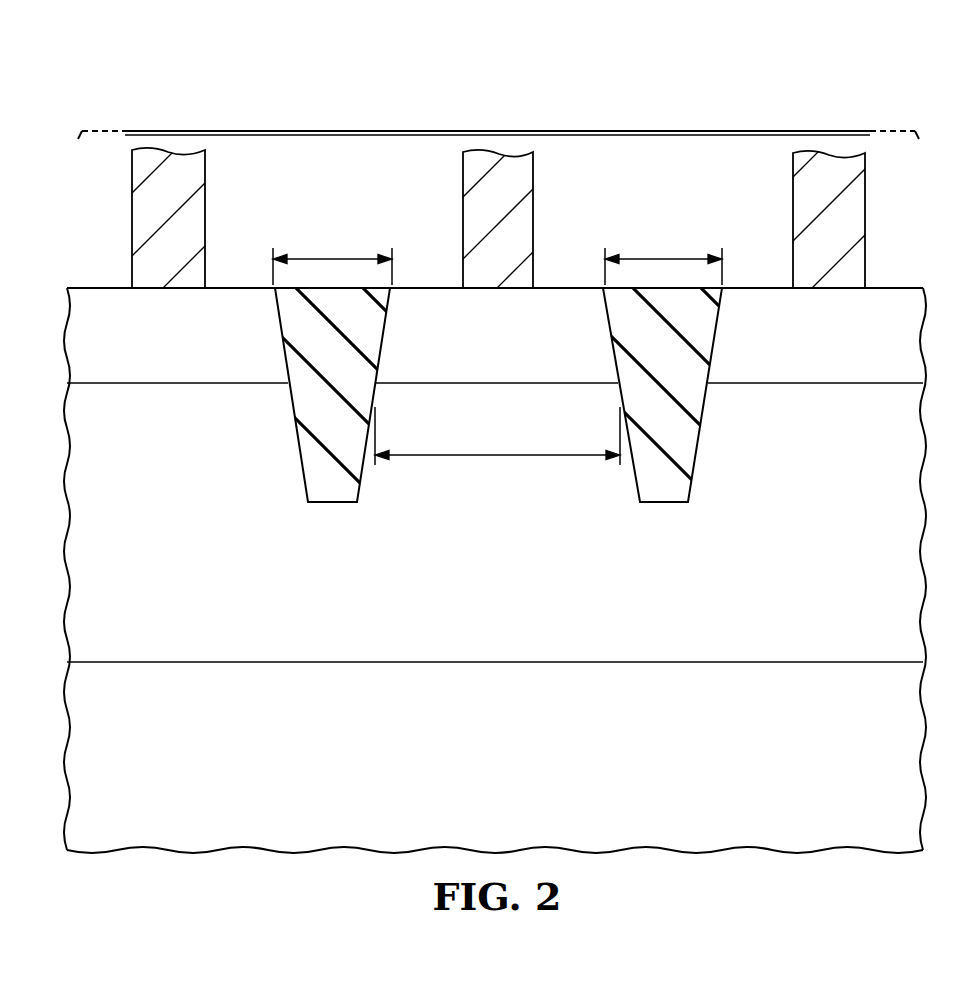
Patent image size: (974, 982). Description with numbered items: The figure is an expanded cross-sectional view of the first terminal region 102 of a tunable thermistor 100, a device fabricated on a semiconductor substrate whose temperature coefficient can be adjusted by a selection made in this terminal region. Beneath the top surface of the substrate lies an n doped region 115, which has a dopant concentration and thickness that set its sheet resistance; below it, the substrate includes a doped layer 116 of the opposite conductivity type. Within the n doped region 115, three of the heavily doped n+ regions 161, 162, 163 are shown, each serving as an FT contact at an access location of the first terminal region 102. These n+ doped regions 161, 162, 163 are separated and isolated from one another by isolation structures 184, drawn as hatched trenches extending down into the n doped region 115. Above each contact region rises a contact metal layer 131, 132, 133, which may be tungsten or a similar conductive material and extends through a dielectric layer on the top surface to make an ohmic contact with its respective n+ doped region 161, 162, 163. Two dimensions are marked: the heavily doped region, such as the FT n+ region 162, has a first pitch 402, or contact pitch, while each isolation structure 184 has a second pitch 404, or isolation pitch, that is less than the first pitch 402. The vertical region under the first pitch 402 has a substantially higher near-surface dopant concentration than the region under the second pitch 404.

The tunable thermistor 100 is at (290, 62).
The first terminal region 102 is at (490, 131).
The doped region 115 is at (520, 599).
The doped layer 116 is at (520, 771).
The contact metal layer 131 is at (855, 218).
The contact metal layer 132 is at (527, 218).
The contact metal layer 133 is at (142, 217).
The n+ doped region 161 is at (830, 375).
The n+ doped region 162 is at (497, 373).
The n+ doped region 163 is at (165, 375).
The isolation structure 184 is at (330, 493).
The first pitch 402 is at (497, 458).
The second pitch 404 is at (333, 258).